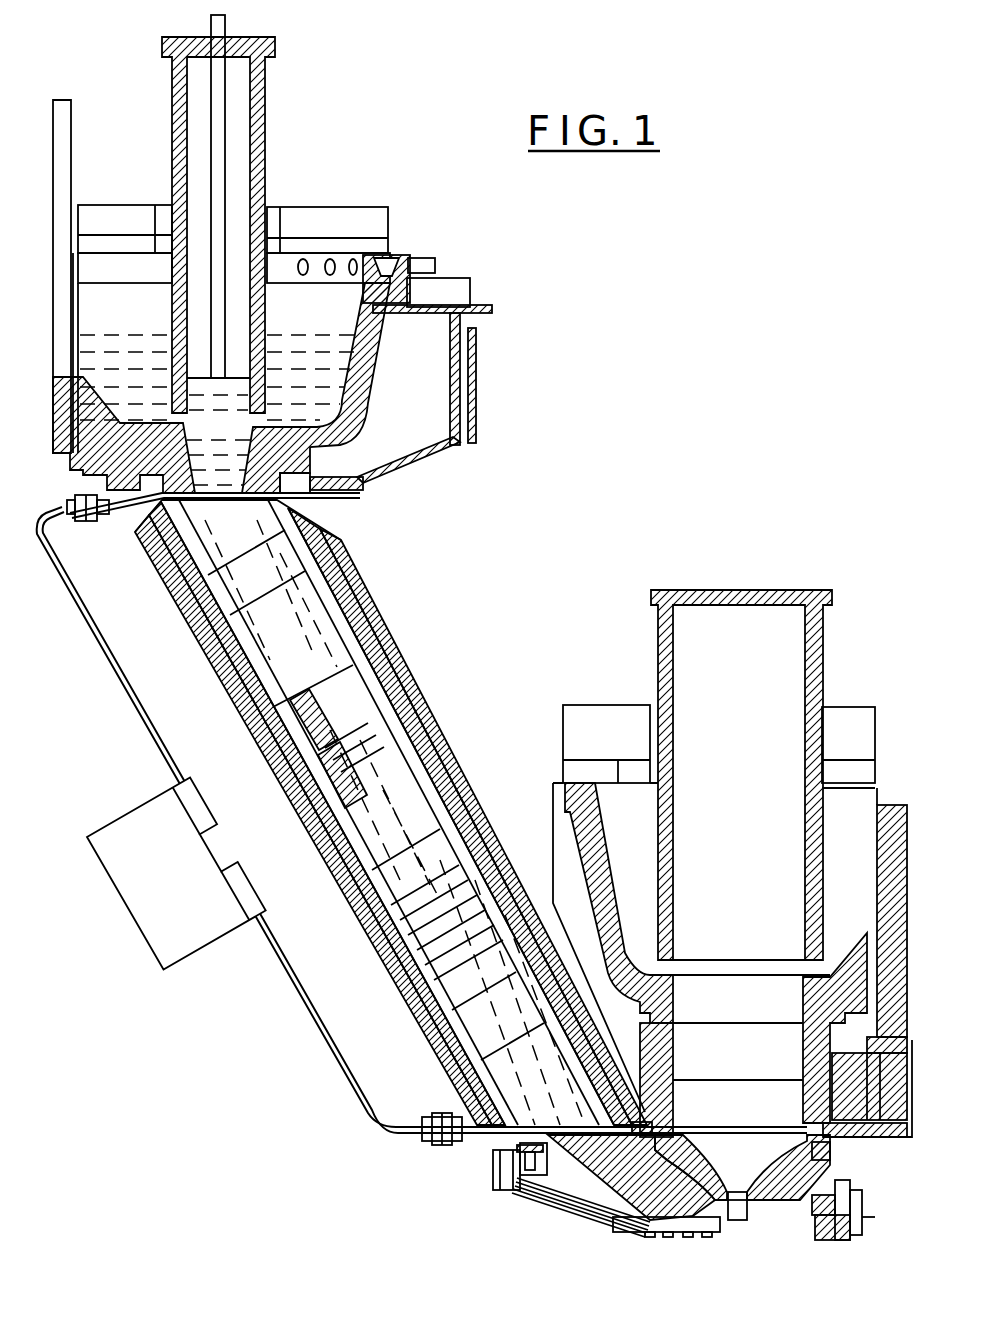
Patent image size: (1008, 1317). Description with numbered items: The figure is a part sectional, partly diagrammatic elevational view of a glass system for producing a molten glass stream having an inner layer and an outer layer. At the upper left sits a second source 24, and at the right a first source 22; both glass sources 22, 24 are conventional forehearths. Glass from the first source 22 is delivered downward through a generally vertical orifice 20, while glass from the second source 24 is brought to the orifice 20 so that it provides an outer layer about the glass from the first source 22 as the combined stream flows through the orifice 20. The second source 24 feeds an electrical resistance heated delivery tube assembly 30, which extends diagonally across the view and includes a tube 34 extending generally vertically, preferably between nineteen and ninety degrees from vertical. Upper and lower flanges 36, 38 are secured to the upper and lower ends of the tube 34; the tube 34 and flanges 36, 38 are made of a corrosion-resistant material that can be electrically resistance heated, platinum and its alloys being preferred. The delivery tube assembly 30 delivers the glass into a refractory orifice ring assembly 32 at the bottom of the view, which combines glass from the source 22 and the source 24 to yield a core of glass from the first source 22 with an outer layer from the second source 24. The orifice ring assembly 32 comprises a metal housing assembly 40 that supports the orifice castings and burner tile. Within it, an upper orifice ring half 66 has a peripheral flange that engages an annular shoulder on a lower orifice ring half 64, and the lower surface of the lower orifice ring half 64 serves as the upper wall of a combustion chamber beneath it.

The orifice 20 is at (737, 1231).
The first source 22 is at (860, 887).
The second source 24 is at (332, 319).
The delivery tube assembly 30 is at (446, 691).
The refractory orifice ring assembly 32 is at (626, 1246).
The tube 34 is at (361, 686).
The upper flange 36 is at (124, 512).
The lower flange 38 is at (460, 1122).
The metal housing assembly 40 is at (887, 1180).
The lower orifice ring half 64 is at (829, 1158).
The upper orifice ring half 66 is at (730, 1140).